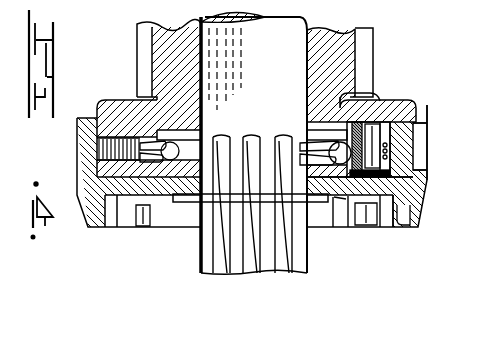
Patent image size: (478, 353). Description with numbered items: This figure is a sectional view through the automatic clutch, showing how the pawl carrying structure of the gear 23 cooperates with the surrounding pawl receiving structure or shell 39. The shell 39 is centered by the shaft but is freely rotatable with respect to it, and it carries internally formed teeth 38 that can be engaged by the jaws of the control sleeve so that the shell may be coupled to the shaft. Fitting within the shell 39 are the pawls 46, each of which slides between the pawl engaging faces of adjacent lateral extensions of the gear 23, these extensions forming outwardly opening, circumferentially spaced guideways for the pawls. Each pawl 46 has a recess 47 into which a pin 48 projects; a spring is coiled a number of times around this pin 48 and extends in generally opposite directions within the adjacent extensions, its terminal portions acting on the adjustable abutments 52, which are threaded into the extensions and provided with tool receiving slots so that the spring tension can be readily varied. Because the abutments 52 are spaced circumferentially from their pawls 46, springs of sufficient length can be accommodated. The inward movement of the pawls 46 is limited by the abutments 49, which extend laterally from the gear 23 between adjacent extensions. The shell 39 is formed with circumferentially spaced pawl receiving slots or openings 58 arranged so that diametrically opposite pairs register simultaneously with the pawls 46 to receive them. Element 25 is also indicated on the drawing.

The gear 23 is at (373, 52).
The splined shaft 25 is at (203, 246).
The internally formed teeth 38 is at (390, 228).
The pawl receiving structure or shell 39 is at (413, 227).
The pawl 46 is at (428, 142).
The recess 47 is at (165, 162).
The pin 48 is at (373, 165).
The abutment 49 is at (378, 97).
The adjustable abutment 52 is at (118, 137).
The pawl receiving slot or opening 58 is at (430, 112).